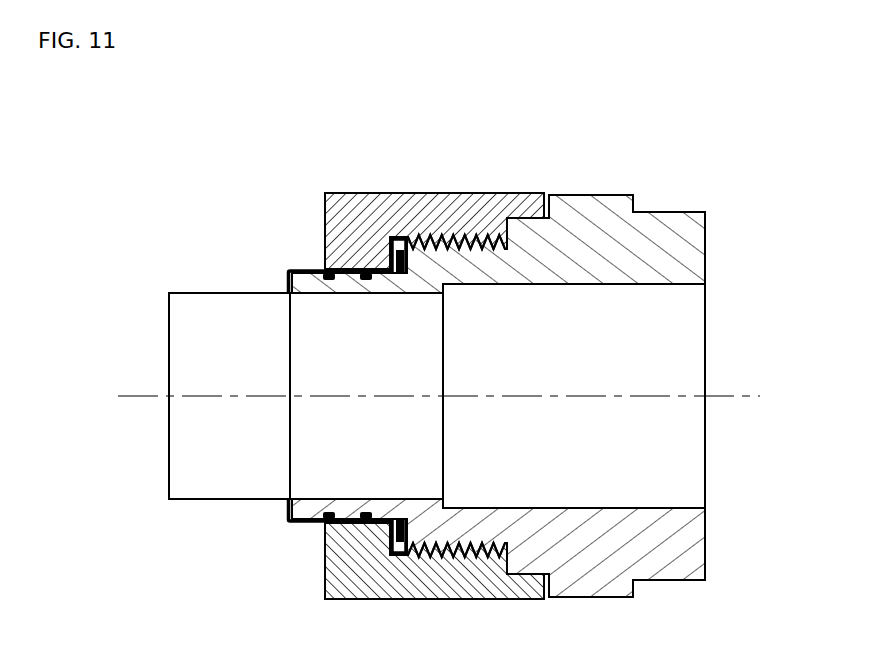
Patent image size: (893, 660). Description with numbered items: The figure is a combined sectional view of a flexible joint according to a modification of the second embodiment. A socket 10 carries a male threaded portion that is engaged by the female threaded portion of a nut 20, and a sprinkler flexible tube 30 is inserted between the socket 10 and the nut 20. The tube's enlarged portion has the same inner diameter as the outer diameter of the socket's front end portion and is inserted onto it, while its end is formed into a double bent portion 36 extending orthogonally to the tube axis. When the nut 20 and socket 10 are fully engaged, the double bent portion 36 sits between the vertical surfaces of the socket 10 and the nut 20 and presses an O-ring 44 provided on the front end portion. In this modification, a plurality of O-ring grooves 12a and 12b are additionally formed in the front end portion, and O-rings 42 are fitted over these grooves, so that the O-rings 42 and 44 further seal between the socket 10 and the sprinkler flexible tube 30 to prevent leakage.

The socket 10 is at (667, 205).
The nut 20 is at (472, 194).
The sprinkler flexible tube 30 is at (233, 291).
The double bent portion 36 is at (389, 247).
The O-rings 42 is at (364, 268).
The O-ring 44 is at (401, 240).
The O-ring groove 12a is at (320, 517).
The O-ring groove 12b is at (332, 527).